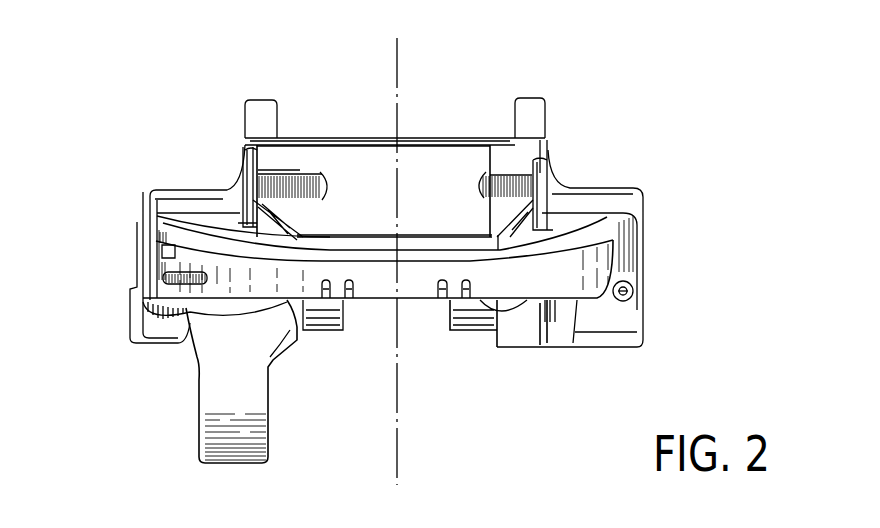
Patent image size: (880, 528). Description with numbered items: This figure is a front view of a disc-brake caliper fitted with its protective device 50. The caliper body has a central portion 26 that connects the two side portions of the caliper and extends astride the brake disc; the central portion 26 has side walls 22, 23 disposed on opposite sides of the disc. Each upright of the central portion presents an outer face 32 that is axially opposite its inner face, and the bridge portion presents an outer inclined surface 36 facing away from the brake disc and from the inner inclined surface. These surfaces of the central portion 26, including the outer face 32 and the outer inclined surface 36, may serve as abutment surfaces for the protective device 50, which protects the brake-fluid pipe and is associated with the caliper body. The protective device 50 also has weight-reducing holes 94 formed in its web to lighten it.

The central portion 26 is at (350, 138).
The outer inclined surface 36 is at (428, 171).
The outer face 32 is at (243, 168).
The protective device 50 is at (613, 263).
The weight-reducing holes 94 is at (163, 279).
The side wall 22 is at (310, 333).
The side wall 23 is at (523, 332).